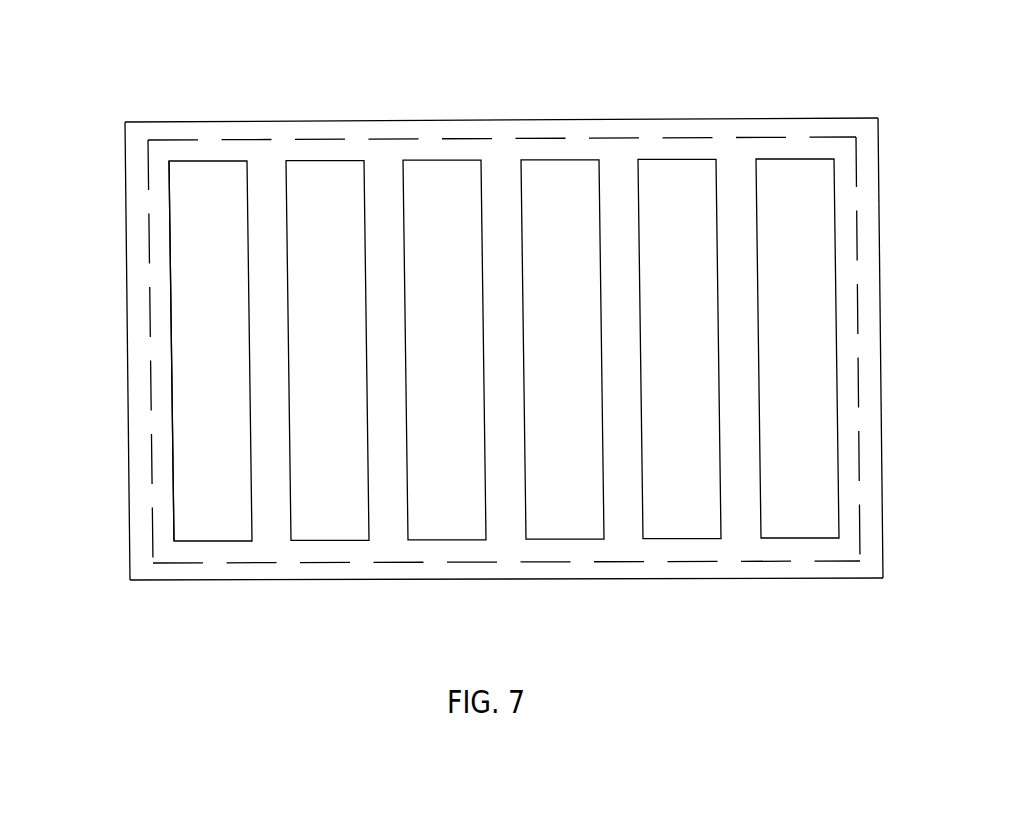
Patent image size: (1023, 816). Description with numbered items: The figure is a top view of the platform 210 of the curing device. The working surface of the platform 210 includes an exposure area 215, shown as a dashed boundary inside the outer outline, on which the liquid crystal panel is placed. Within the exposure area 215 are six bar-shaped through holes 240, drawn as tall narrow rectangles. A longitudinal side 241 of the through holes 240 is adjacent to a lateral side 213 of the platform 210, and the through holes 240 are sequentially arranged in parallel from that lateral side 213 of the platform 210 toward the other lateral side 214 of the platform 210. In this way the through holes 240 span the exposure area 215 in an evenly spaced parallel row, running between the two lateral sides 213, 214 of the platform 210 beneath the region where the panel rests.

The platform 210 is at (168, 121).
The lateral side 213 is at (126, 281).
The other lateral side 214 is at (880, 292).
The exposure area 215 is at (679, 138).
The through holes 240 is at (211, 180).
The longitudinal side 241 is at (173, 373).